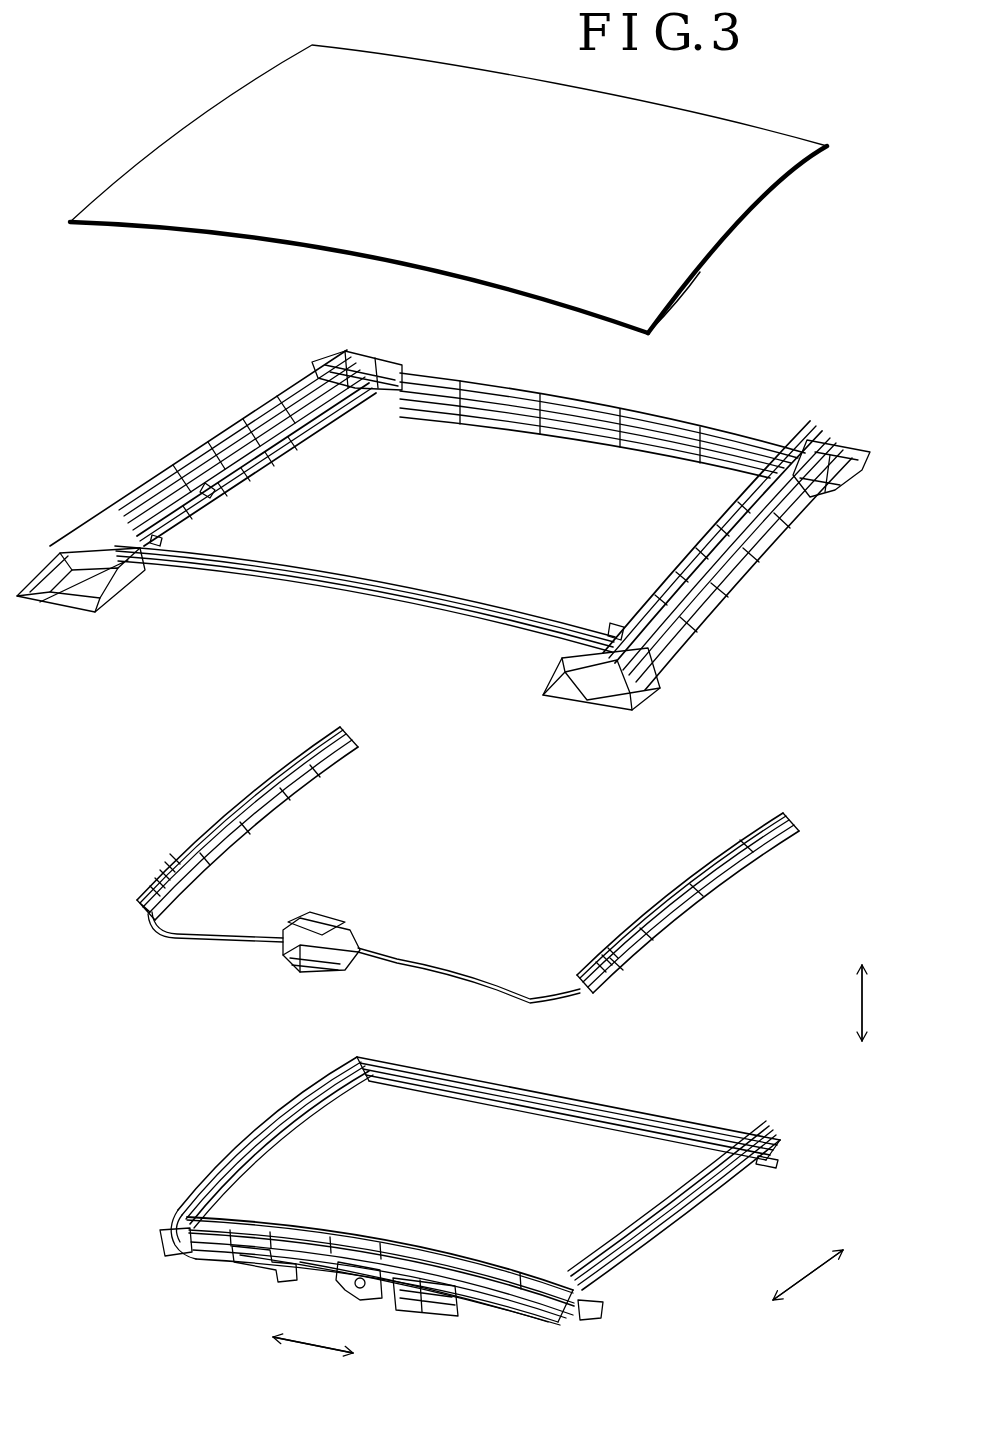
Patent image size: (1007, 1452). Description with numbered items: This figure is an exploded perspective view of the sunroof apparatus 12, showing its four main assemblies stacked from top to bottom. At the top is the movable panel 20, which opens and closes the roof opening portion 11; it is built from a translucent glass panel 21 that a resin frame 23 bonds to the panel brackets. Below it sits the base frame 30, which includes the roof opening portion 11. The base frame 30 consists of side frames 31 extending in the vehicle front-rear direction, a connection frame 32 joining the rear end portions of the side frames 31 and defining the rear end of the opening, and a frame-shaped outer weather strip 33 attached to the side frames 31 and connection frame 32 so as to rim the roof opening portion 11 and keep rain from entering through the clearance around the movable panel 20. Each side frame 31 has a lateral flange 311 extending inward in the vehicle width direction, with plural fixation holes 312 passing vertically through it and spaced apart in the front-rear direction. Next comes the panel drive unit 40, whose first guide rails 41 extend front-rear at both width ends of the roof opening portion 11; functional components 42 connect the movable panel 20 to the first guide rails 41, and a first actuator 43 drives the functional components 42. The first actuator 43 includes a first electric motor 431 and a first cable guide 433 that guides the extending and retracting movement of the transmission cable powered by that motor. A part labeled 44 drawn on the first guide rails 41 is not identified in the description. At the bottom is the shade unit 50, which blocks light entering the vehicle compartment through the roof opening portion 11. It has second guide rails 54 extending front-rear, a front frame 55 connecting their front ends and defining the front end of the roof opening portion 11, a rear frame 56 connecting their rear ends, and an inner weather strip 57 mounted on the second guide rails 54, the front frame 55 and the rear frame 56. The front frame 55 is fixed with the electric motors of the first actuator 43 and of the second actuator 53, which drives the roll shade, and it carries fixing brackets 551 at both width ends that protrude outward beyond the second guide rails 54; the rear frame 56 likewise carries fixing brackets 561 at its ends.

The sunroof apparatus 12 is at (815, 80).
The movable panel 20 is at (163, 88).
The glass panel 21 is at (705, 228).
The resin frame 23 is at (690, 275).
The base frame 30 is at (165, 404).
The roof opening portion 11 is at (463, 440).
The connection frame 32 is at (612, 412).
The side frames 31 is at (135, 495).
The outer weather strip 33 is at (492, 607).
The lateral flange 311 is at (265, 455).
The fixation holes 312 is at (212, 498).
The panel drive unit 40 is at (166, 741).
The functional components 42 is at (190, 833).
The rail upper portion 44 is at (276, 772).
The first guide rails 41 is at (268, 810).
The first actuator 43 is at (342, 926).
The first electric motor 431 is at (298, 915).
The first cable guide 433 is at (228, 945).
The shade unit 50 is at (168, 1079).
The rear frame 56 is at (537, 1115).
The fixing brackets 561 is at (775, 1162).
The second guide rails 54 is at (275, 1150).
The front frame 55 is at (425, 1258).
The inner weather strip 57 is at (523, 1272).
The fixing brackets 551 is at (155, 1235).
The second actuator 53 is at (435, 1312).